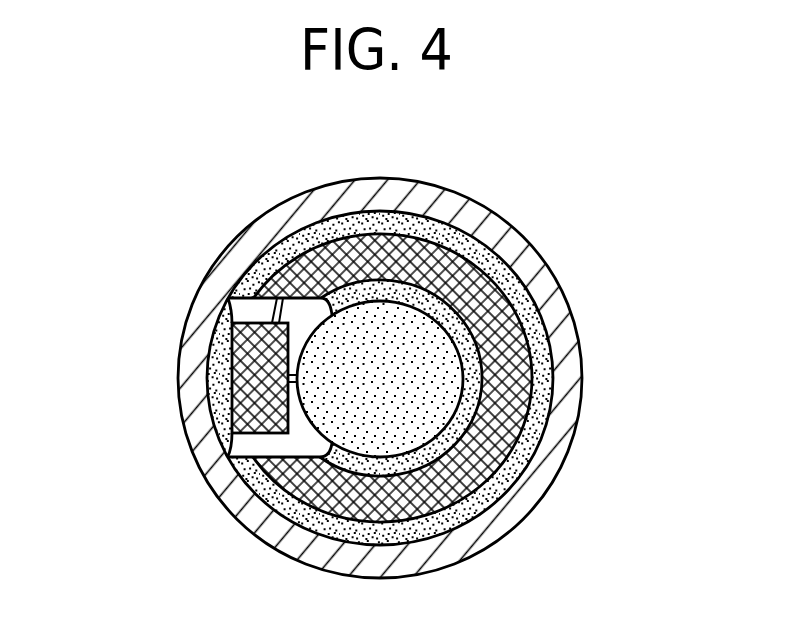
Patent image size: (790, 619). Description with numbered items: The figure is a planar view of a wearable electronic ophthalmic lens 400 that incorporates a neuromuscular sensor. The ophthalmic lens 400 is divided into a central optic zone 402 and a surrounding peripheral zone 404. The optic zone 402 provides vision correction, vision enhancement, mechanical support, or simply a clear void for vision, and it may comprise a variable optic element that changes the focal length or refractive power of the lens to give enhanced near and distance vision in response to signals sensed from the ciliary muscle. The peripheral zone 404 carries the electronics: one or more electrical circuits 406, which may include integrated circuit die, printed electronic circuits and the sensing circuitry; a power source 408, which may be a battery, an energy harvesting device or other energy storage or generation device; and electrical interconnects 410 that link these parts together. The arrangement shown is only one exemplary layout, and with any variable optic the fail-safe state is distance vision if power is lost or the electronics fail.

The ophthalmic lens 400 is at (305, 192).
The optic zone 402 is at (447, 423).
The peripheral zone 404 is at (248, 267).
The electrical circuits 406 is at (232, 325).
The power source 408 is at (487, 277).
The electrical interconnects 410 is at (285, 303).